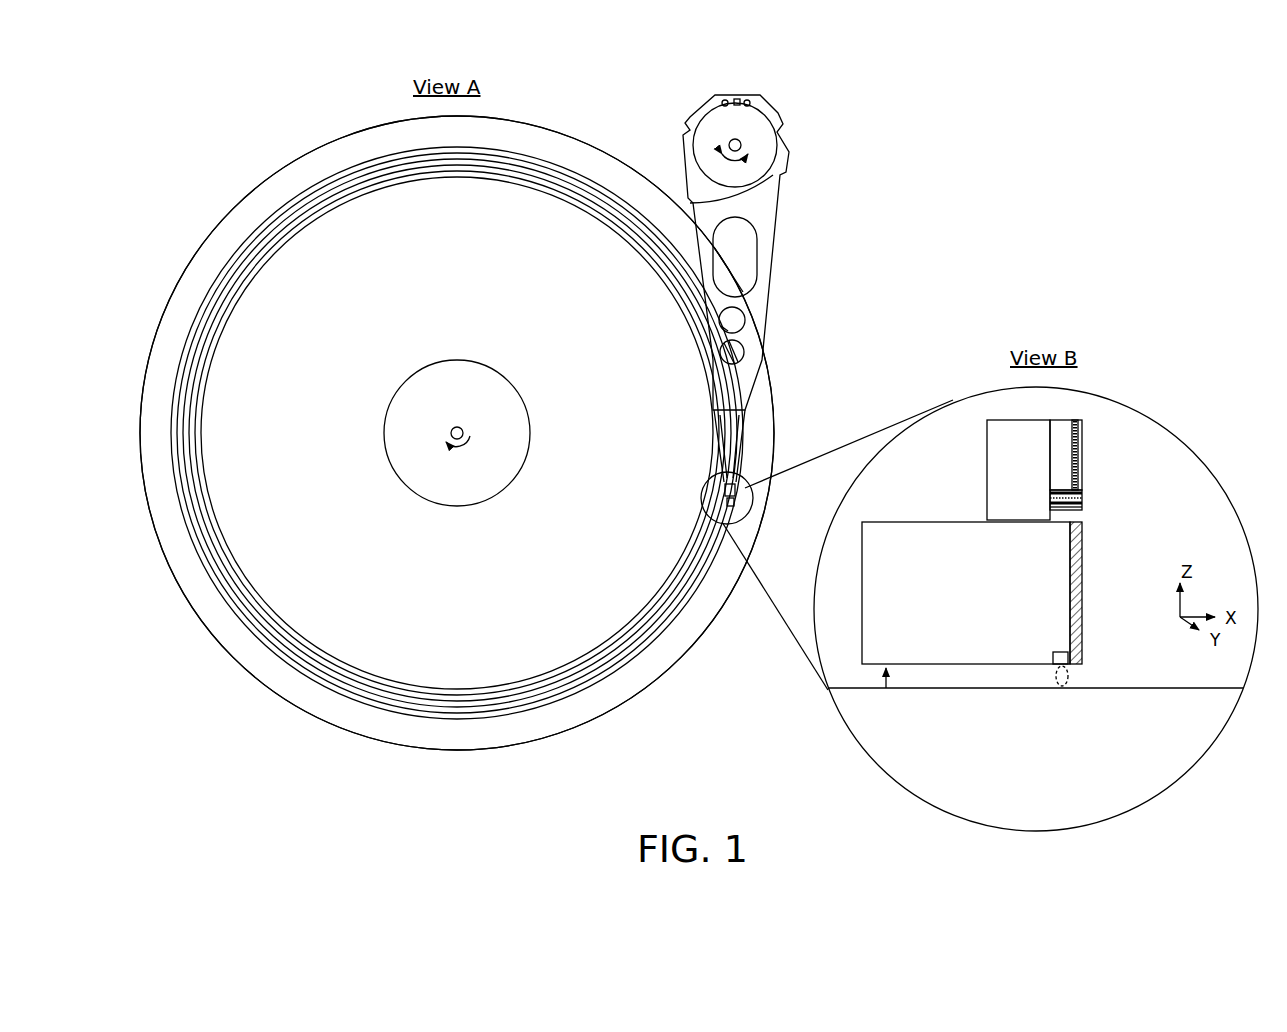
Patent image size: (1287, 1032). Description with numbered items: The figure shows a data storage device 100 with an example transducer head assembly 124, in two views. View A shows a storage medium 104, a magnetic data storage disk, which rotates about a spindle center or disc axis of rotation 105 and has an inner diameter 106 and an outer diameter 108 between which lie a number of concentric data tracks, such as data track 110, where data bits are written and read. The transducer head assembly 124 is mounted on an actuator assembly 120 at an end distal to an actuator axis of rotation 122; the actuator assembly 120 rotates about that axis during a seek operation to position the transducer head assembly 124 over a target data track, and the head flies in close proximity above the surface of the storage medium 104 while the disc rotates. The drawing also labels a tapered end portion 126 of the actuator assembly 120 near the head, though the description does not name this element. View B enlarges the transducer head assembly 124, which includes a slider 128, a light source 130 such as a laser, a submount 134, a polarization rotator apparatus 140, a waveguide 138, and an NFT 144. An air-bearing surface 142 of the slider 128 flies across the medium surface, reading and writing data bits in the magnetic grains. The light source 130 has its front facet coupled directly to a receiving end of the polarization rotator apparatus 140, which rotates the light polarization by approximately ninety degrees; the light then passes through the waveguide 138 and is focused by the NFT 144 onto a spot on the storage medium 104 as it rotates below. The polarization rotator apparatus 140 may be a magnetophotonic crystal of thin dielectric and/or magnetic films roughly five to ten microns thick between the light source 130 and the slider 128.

The data storage device 100 is at (215, 98).
The storage medium 104 is at (420, 748).
The disc axis of rotation 105 is at (423, 365).
The inner diameter 106 is at (457, 433).
The outer diameter 108 is at (340, 137).
The data track 110 is at (630, 658).
The actuator assembly 120 is at (793, 224).
The actuator axis of rotation 122 is at (748, 138).
The transducer head assembly 124 is at (742, 500).
The suspension 126 is at (720, 432).
The slider 128 is at (862, 607).
The light source 130 is at (1075, 420).
The submount 134 is at (987, 482).
The waveguide 138 is at (1082, 595).
The polarization rotator apparatus 140 is at (1083, 494).
The air-bearing surface 142 is at (887, 689).
The NFT 144 is at (1053, 653).